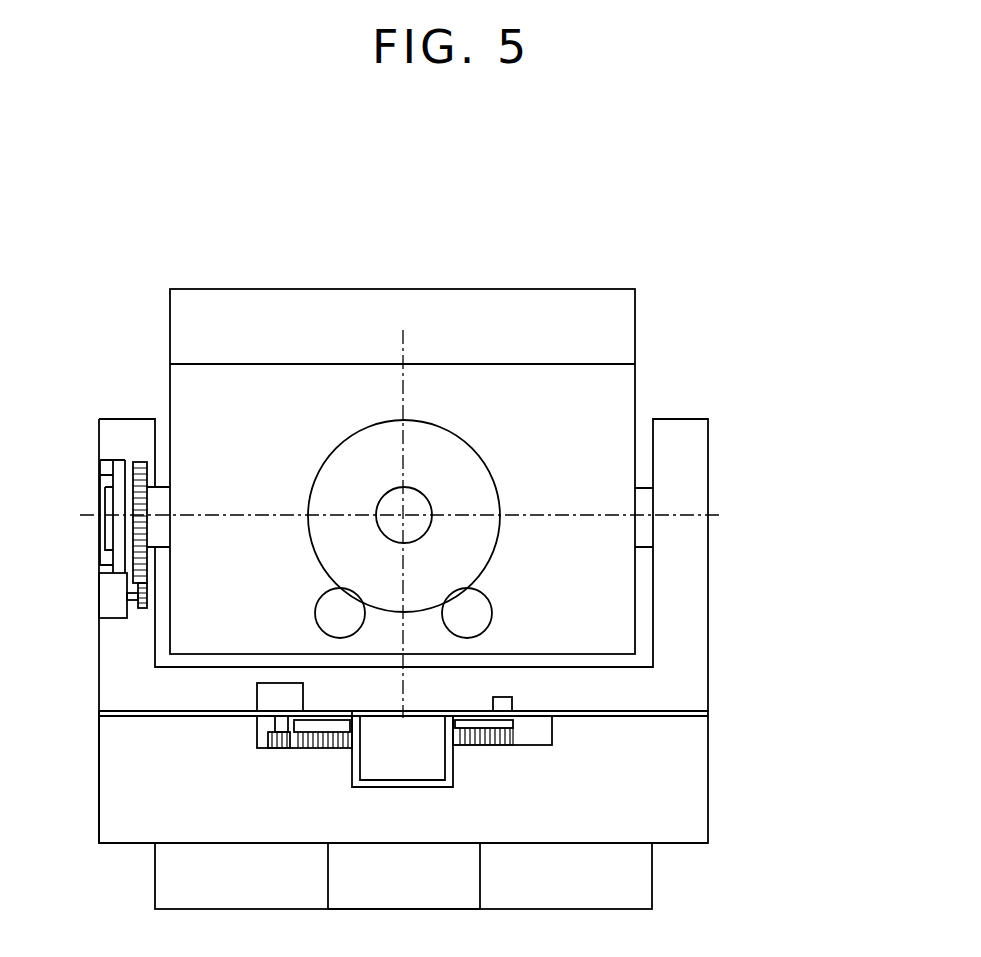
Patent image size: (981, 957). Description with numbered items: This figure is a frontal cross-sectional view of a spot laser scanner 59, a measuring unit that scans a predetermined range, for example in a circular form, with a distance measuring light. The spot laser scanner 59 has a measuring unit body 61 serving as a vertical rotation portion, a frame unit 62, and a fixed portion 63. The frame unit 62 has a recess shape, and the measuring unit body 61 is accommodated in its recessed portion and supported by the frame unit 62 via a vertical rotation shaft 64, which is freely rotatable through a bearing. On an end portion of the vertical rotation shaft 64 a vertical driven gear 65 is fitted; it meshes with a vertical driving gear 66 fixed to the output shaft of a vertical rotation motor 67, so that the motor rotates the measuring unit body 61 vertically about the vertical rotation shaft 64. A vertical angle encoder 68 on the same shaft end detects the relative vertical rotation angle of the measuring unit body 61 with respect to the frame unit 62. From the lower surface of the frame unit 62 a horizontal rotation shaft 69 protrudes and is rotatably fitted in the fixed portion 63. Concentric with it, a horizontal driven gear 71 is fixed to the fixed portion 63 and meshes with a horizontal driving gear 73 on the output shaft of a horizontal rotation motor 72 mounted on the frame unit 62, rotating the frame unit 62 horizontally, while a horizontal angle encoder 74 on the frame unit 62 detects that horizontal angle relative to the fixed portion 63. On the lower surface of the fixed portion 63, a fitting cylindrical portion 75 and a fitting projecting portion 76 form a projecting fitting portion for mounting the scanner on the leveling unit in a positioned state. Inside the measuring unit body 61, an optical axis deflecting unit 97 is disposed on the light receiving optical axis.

The spot laser scanner 59 is at (358, 251).
The measuring unit body 61 is at (527, 289).
The frame unit 62 is at (688, 419).
The fixed portion 63 is at (708, 775).
The vertical rotation shaft 64 is at (645, 488).
The vertical driven gear 65 is at (140, 462).
The vertical driving gear 66 is at (143, 609).
The vertical rotation motor 67 is at (104, 619).
The vertical angle encoder 68 is at (105, 459).
The horizontal rotation shaft 69 is at (448, 767).
The horizontal driven gear 71 is at (515, 738).
The horizontal rotation motor 72 is at (257, 690).
The horizontal driving gear 73 is at (268, 740).
The horizontal angle encoder 74 is at (519, 703).
The fitting cylindrical portion 75 is at (652, 887).
The fitting projecting portion 76 is at (480, 885).
The optical axis deflecting unit 97 is at (466, 441).